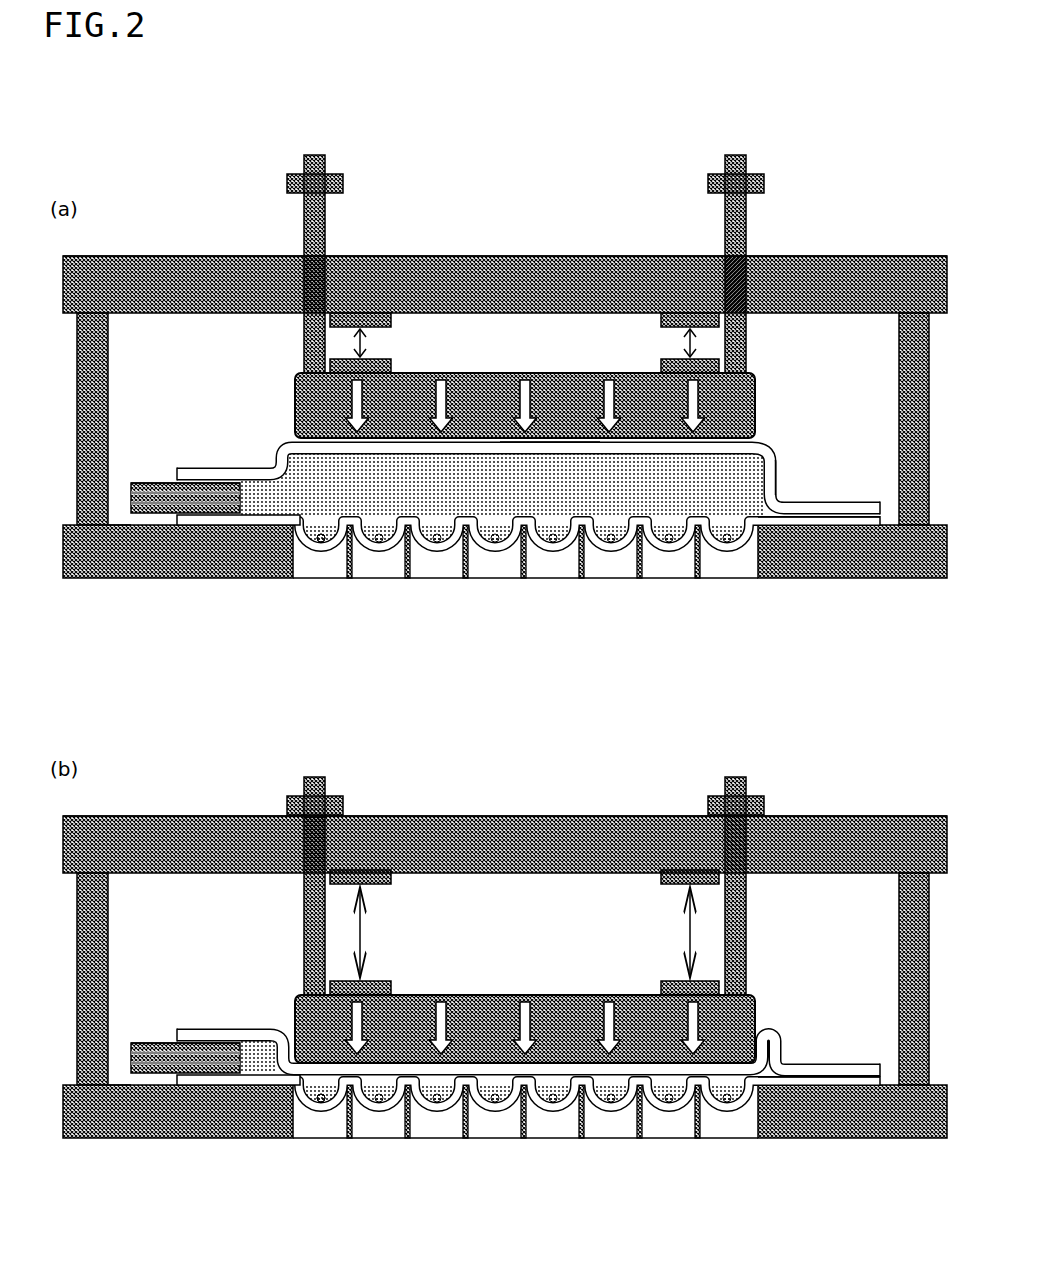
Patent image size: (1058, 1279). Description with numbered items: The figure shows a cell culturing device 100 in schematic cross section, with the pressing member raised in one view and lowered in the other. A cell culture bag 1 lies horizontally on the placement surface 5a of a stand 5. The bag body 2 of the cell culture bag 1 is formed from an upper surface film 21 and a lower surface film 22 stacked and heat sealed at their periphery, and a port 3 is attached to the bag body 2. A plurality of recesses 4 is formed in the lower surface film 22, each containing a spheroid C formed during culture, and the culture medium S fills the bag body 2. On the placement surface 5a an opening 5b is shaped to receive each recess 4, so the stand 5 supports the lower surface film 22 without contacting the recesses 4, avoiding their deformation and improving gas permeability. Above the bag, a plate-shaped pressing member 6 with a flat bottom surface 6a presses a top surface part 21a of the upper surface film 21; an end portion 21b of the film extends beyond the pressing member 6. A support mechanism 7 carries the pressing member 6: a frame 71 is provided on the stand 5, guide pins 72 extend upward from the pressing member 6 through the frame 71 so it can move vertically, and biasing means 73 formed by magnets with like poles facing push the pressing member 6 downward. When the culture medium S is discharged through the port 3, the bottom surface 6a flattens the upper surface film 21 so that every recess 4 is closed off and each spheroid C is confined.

The cell culturing device 100 is at (530, 146).
The cell culture bag 1 is at (185, 701).
The bag body 2 is at (205, 472).
The port 3 is at (153, 483).
The recess 4 is at (380, 558).
The stand 5 is at (140, 580).
The placement surface 5a is at (118, 516).
The opening 5b is at (336, 568).
The pressing member 6 is at (758, 403).
The bottom surface 6a is at (716, 447).
The support mechanism 7 is at (878, 252).
The frame 71 is at (168, 256).
The guide pin 72 is at (326, 215).
The biasing means 73 is at (392, 362).
The upper surface film 21 is at (233, 467).
The top surface part 21a is at (541, 441).
The upper sheet end portion 21b is at (784, 483).
The lower surface film 22 is at (837, 523).
The culture medium S is at (275, 497).
The spheroid C is at (318, 548).